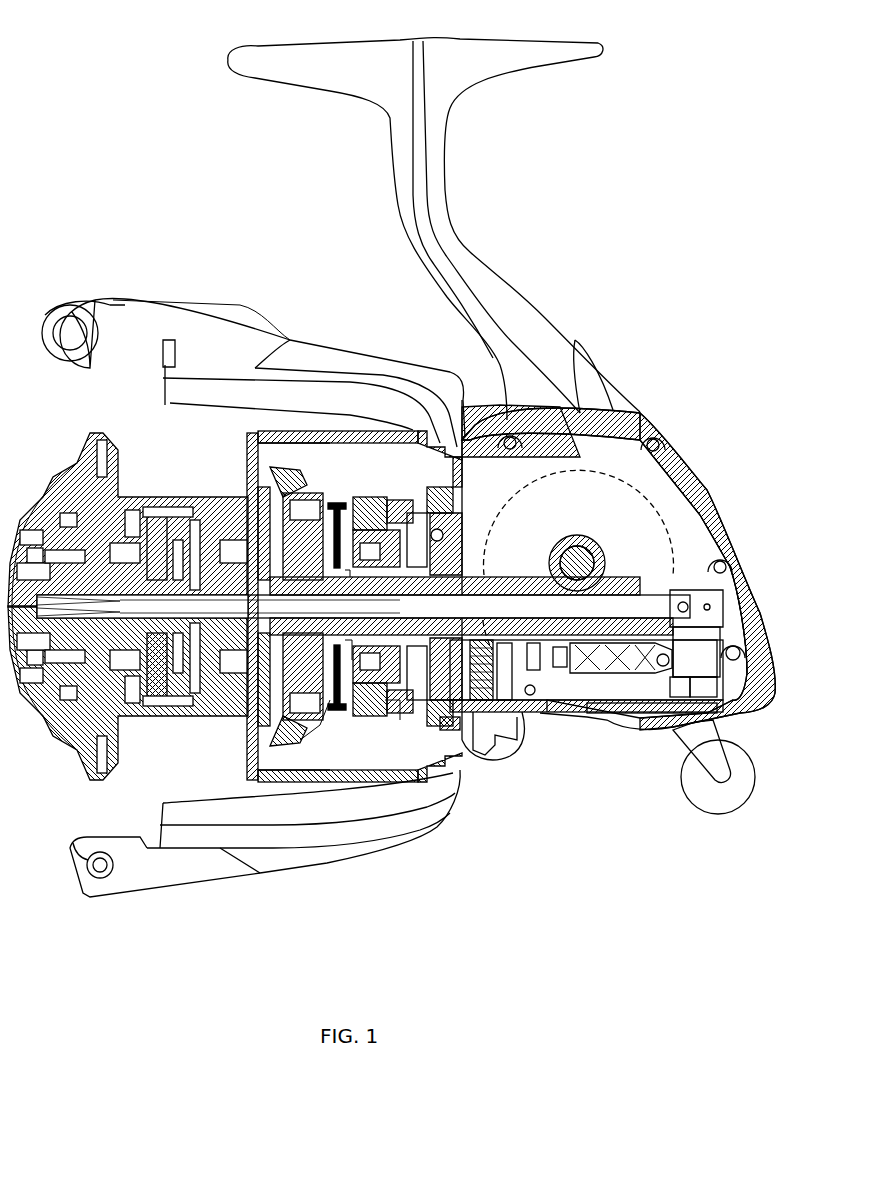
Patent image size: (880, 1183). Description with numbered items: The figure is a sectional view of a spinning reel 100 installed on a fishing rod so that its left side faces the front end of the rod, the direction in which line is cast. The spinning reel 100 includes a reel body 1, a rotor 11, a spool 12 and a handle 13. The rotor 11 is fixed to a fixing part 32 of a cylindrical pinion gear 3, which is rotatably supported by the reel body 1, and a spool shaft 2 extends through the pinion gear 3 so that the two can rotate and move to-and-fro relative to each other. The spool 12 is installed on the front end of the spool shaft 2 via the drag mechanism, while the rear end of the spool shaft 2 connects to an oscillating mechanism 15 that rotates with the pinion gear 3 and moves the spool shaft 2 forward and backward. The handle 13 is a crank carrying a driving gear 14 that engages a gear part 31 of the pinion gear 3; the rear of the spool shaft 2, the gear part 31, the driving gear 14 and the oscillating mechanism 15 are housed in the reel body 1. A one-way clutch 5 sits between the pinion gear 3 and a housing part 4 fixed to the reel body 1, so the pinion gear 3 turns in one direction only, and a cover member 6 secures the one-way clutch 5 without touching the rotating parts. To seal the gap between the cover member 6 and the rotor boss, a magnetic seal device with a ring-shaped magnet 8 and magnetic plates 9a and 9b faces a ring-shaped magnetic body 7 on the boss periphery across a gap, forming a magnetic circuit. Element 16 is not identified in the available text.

The spinning reel 100 is at (622, 132).
The reel body 1 is at (636, 385).
The spool shaft 2 is at (578, 620).
The pinion gear 3 is at (490, 705).
The housing part 4 is at (460, 480).
The one-way clutch 5 is at (375, 520).
The cover member 6 is at (348, 510).
The magnetic body 7 is at (316, 712).
The magnet 8 is at (338, 665).
The magnetic plate 9a is at (355, 660).
The magnetic plate 9b is at (350, 650).
The rotor 11 is at (350, 330).
The spool 12 is at (148, 497).
The handle 13 is at (718, 815).
The driving gear 14 is at (640, 485).
The oscillating mechanism 15 is at (625, 672).
The drag mechanism 16 is at (177, 707).
The gear part 31 is at (520, 690).
The fixing part 32 is at (392, 665).